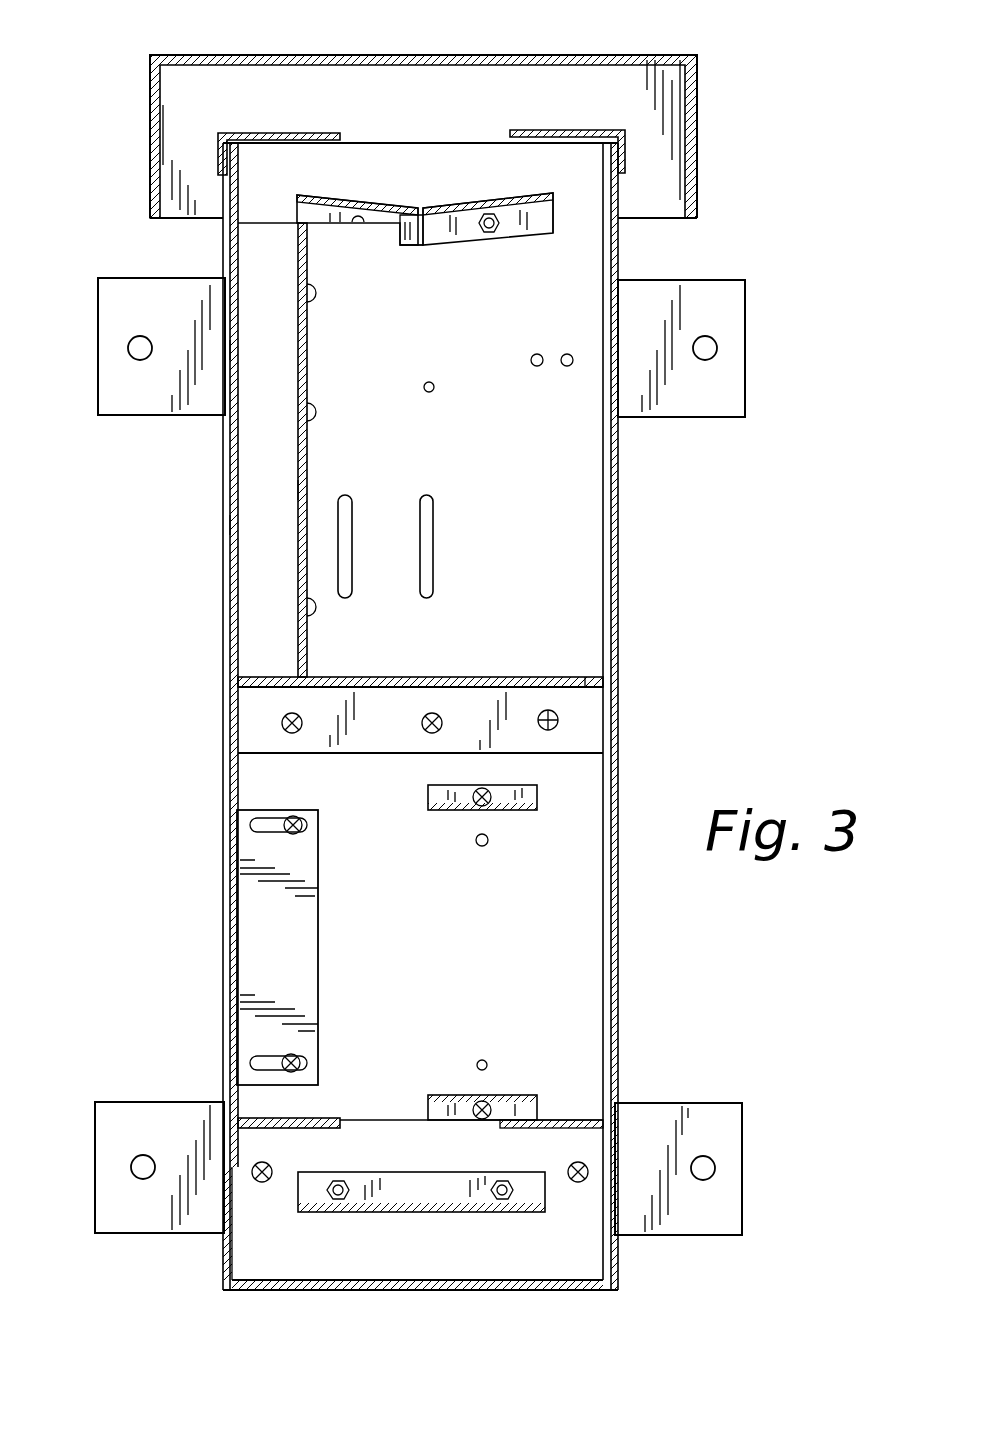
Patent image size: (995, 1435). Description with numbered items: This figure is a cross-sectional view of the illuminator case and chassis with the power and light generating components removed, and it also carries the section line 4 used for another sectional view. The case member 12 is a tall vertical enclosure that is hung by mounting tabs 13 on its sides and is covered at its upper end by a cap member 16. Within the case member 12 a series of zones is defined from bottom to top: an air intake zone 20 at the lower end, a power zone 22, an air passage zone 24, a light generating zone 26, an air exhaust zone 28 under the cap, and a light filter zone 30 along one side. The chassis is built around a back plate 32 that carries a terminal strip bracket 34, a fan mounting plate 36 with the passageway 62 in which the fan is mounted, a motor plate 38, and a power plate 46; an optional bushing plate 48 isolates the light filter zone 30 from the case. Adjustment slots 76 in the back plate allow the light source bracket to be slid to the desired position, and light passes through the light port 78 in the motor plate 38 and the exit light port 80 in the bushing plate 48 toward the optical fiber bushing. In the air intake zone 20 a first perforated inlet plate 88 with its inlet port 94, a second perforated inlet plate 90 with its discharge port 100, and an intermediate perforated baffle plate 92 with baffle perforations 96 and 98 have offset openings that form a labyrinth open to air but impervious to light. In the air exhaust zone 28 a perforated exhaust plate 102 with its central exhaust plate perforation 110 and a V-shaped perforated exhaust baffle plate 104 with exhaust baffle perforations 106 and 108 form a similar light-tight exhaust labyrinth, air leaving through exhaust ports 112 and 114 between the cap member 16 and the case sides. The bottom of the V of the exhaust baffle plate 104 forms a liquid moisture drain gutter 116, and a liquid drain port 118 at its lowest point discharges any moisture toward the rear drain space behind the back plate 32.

The section line 4- 4 is at (450, 422).
The case member 12 is at (622, 585).
The mounting tabs 13 is at (100, 316).
The cap member 16 is at (700, 78).
The air intake zone 20 is at (755, 1168).
The power zone 22 is at (675, 990).
The air passage zone 24 is at (647, 713).
The light generating zone 26 is at (670, 500).
The air exhaust zone 28 is at (715, 135).
The light filter zone 30 is at (275, 575).
The back plate 32 is at (556, 507).
The terminal strip bracket 34 is at (515, 810).
The fan mounting plate 36 is at (585, 684).
The motor plate 38 is at (308, 490).
The power plate 46 is at (300, 965).
The bushing plate 48 is at (240, 525).
The passageway 62 is at (483, 680).
The adjustment slots 76 is at (426, 592).
The light port 78 is at (310, 355).
The exit light port 80 is at (240, 357).
The first perforated inlet plate 88 is at (258, 1292).
The second perforated inlet plate 90 is at (300, 1128).
The intermediate perforated baffle plate 92 is at (405, 1214).
The inlet port 94 is at (355, 1292).
The baffle perforation 96 is at (300, 1207).
The baffle perforation 98 is at (545, 1207).
The discharge port 100 is at (360, 1120).
The perforated exhaust plate 102 is at (560, 130).
The perforated exhaust baffle plate 104 is at (445, 200).
The exhaust baffle perforation 106 is at (285, 198).
The exhaust baffle perforation 108 is at (552, 192).
The exhaust plate perforation 110 is at (340, 130).
The exhaust port 112 is at (165, 216).
The exhaust port 114 is at (670, 208).
The liquid moisture drain gutter 116 is at (422, 210).
The liquid drain port 118 is at (410, 248).